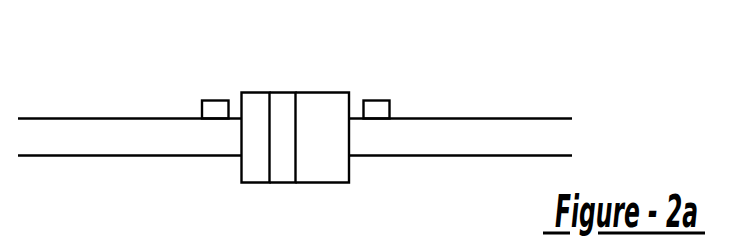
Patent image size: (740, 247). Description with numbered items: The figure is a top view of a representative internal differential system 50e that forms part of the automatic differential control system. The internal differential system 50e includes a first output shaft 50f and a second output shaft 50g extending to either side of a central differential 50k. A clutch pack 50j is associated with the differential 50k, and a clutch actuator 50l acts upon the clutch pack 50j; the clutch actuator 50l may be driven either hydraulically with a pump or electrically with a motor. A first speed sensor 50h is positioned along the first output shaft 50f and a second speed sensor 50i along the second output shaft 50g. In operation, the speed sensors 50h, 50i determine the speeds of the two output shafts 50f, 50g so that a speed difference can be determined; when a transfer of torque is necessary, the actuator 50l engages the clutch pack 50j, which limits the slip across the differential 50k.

The internal differential system 50e is at (67, 101).
The first output shaft 50f is at (127, 118).
The second output shaft 50g is at (510, 118).
The first speed sensor 50h is at (210, 100).
The second speed sensor 50i is at (376, 100).
The clutch pack 50j is at (282, 92).
The differential 50k is at (335, 99).
The clutch actuator 50l is at (255, 92).